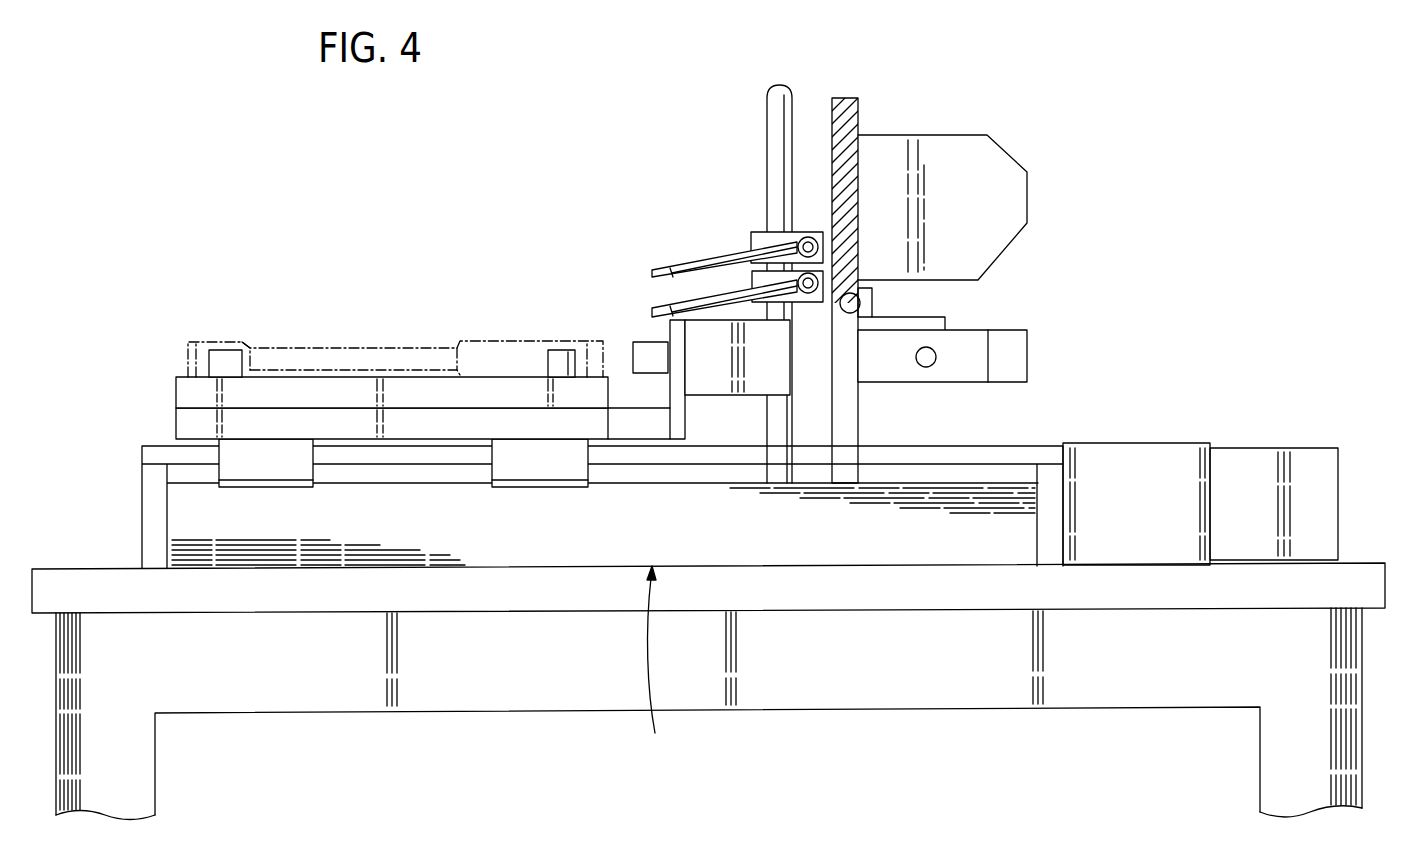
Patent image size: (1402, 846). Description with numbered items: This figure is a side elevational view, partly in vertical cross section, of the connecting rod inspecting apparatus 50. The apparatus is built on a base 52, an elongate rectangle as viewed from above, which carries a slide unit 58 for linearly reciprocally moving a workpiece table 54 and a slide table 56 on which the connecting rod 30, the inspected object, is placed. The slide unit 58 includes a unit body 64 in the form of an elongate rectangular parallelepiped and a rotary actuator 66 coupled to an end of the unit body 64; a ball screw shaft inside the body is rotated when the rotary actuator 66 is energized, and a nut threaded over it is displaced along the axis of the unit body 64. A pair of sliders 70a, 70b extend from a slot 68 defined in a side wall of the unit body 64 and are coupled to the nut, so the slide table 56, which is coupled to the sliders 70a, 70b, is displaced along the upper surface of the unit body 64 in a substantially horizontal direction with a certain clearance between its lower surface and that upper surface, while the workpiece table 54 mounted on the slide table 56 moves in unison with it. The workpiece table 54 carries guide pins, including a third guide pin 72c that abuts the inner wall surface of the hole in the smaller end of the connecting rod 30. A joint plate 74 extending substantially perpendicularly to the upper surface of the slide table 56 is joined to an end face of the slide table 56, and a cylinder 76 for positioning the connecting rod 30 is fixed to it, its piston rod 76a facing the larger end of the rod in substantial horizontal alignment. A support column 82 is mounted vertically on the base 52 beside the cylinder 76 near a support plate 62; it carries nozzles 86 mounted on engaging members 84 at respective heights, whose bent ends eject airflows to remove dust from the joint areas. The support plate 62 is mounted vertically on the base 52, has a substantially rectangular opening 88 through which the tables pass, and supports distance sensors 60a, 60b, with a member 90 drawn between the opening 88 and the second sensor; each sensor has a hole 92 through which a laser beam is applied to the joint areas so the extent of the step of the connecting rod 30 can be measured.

The connecting rod 30 is at (337, 342).
The connecting rod inspecting apparatus 50 is at (562, 93).
The base 52 is at (1180, 594).
The workpiece table 54 is at (186, 393).
The slide table 56 is at (186, 429).
The slide unit 58 is at (652, 664).
The first distance sensor 60a is at (949, 146).
The second distance sensor 60b is at (1004, 357).
The support plate 62 is at (846, 107).
The unit body 64 is at (815, 553).
The rotary actuator 66 is at (1252, 464).
The slot 68 is at (407, 482).
The slider 70a is at (540, 470).
The slider 70b is at (270, 470).
The third guide pin 72c is at (224, 360).
The joint plate 74 is at (680, 425).
The cylinder 76 is at (770, 360).
The piston rod 76a is at (645, 348).
The support column 82 is at (778, 98).
The engaging member 84 is at (757, 230).
The nozzle 86 is at (703, 300).
The opening 88 is at (862, 306).
The bracket 90 is at (937, 322).
The hole 92 is at (922, 367).